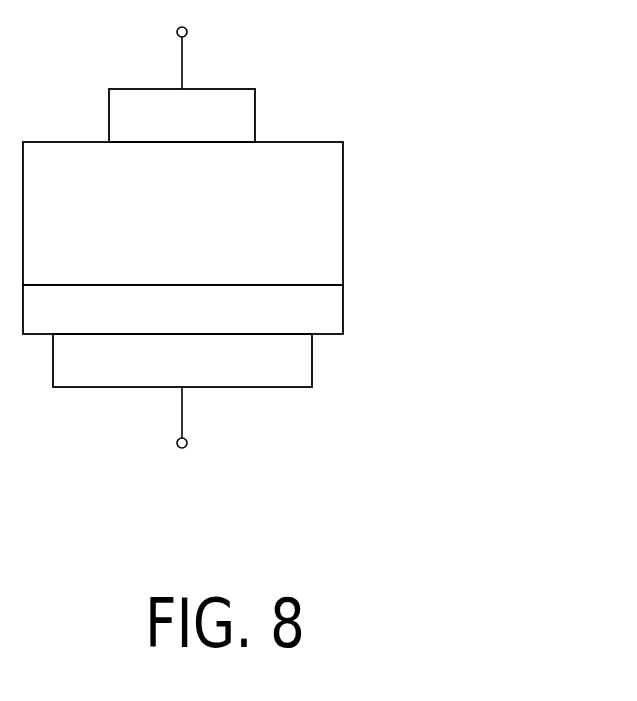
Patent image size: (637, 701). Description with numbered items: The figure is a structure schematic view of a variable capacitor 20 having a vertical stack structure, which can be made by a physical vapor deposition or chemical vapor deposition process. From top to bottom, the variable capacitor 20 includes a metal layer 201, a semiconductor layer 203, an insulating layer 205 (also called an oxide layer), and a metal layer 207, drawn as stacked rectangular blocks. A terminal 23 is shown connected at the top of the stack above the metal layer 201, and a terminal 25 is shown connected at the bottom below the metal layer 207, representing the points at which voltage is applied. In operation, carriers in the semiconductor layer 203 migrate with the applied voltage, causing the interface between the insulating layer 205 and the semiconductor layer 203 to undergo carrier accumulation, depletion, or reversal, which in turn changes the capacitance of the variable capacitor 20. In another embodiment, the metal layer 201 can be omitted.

The variable capacitor 20 is at (526, 457).
The first terminal 23 is at (187, 31).
The second terminal 25 is at (187, 442).
The metal layer 201 is at (255, 113).
The semiconductor layer 203 is at (343, 218).
The insulating layer 205 is at (343, 308).
The metal layer 207 is at (312, 360).